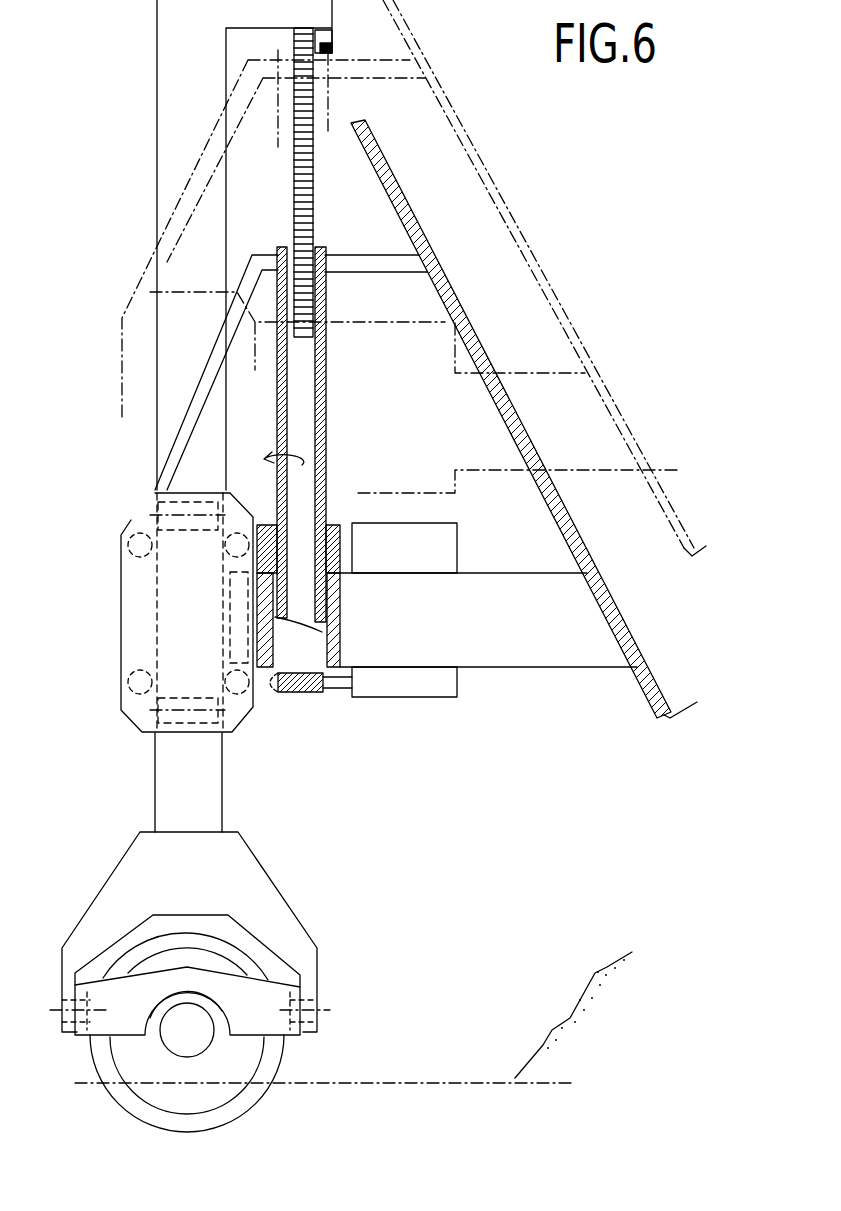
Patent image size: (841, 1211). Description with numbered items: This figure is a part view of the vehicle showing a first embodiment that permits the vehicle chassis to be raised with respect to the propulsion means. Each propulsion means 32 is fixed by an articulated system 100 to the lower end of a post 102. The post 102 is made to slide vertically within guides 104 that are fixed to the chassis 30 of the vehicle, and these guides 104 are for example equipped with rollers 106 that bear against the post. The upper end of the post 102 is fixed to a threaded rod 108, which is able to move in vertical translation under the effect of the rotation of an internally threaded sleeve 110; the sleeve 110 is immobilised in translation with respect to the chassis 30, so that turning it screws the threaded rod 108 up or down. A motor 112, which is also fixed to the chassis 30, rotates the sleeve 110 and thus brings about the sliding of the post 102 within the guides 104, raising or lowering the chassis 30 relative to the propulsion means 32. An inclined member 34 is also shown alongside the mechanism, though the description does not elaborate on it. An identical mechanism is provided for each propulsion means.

The chassis 30 is at (347, 607).
The propulsion means 32 is at (273, 1055).
The inclined plate 34 is at (407, 220).
The articulated system 100 is at (263, 997).
The post 102 is at (222, 798).
The guides 104 is at (134, 712).
The rollers 106 is at (148, 500).
The threaded rod 108 is at (295, 218).
The internally threaded sleeve 110 is at (328, 450).
The motor 112 is at (380, 686).